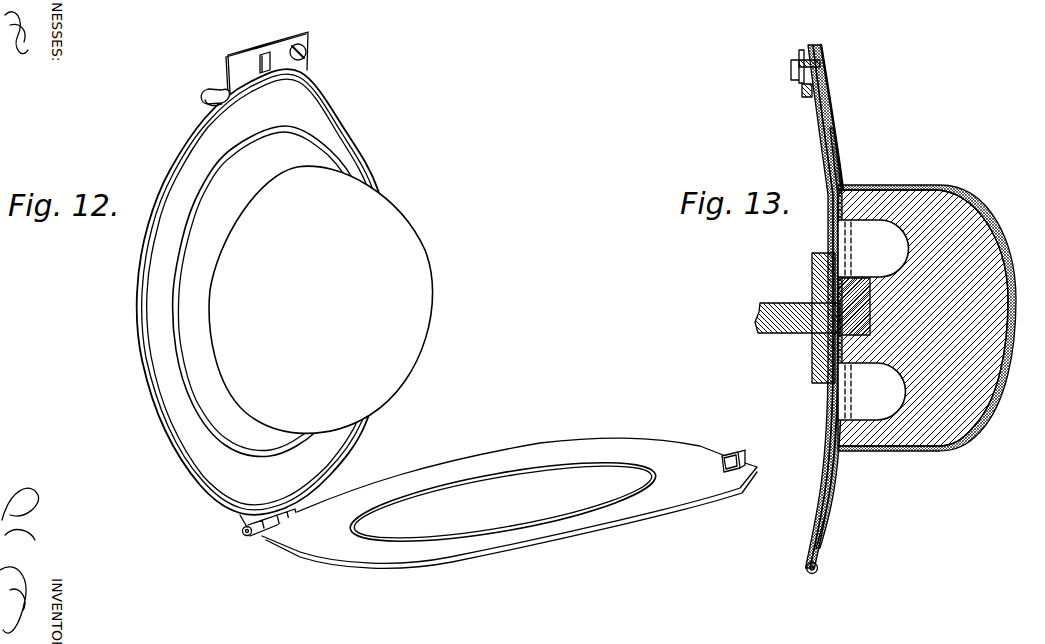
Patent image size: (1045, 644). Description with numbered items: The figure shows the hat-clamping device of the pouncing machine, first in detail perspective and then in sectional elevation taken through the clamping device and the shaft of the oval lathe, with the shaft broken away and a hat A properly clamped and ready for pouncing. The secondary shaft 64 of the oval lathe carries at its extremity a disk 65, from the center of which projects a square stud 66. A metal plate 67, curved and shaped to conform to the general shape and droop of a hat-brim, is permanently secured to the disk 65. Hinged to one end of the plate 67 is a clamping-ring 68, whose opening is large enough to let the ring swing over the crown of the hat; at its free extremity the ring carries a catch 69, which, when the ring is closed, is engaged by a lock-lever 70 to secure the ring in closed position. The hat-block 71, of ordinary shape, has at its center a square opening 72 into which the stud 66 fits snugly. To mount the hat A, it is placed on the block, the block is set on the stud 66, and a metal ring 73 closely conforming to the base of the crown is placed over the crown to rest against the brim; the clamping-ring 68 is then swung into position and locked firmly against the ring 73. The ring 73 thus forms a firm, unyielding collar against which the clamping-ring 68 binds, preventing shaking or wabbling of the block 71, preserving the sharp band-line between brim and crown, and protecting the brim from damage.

In FIG. 13, the secondary shaft 64 is at (768, 302).
In FIG. 13, the disk 65 is at (812, 256).
In FIG. 13, the square stud 66 is at (838, 335).
In FIG. 12, the metal plate 67 is at (158, 410).
In FIG. 13, the metal plate 67 is at (818, 128).
In FIG. 12, the clamping-ring 68 is at (546, 443).
In FIG. 13, the clamping-ring 68 is at (841, 139).
In FIG. 12, the catch 69 is at (735, 452).
In FIG. 13, the catch 69 is at (791, 67).
In FIG. 12, the lock-lever 70 is at (220, 89).
In FIG. 13, the lock-lever 70 is at (802, 90).
In FIG. 13, the hat-block 71 is at (876, 190).
In FIG. 13, the square opening 72 is at (870, 333).
In FIG. 12, the metal ring 73 is at (183, 371).
In FIG. 13, the metal ring 73 is at (841, 166).
In FIG. 13, the hat A is at (930, 185).